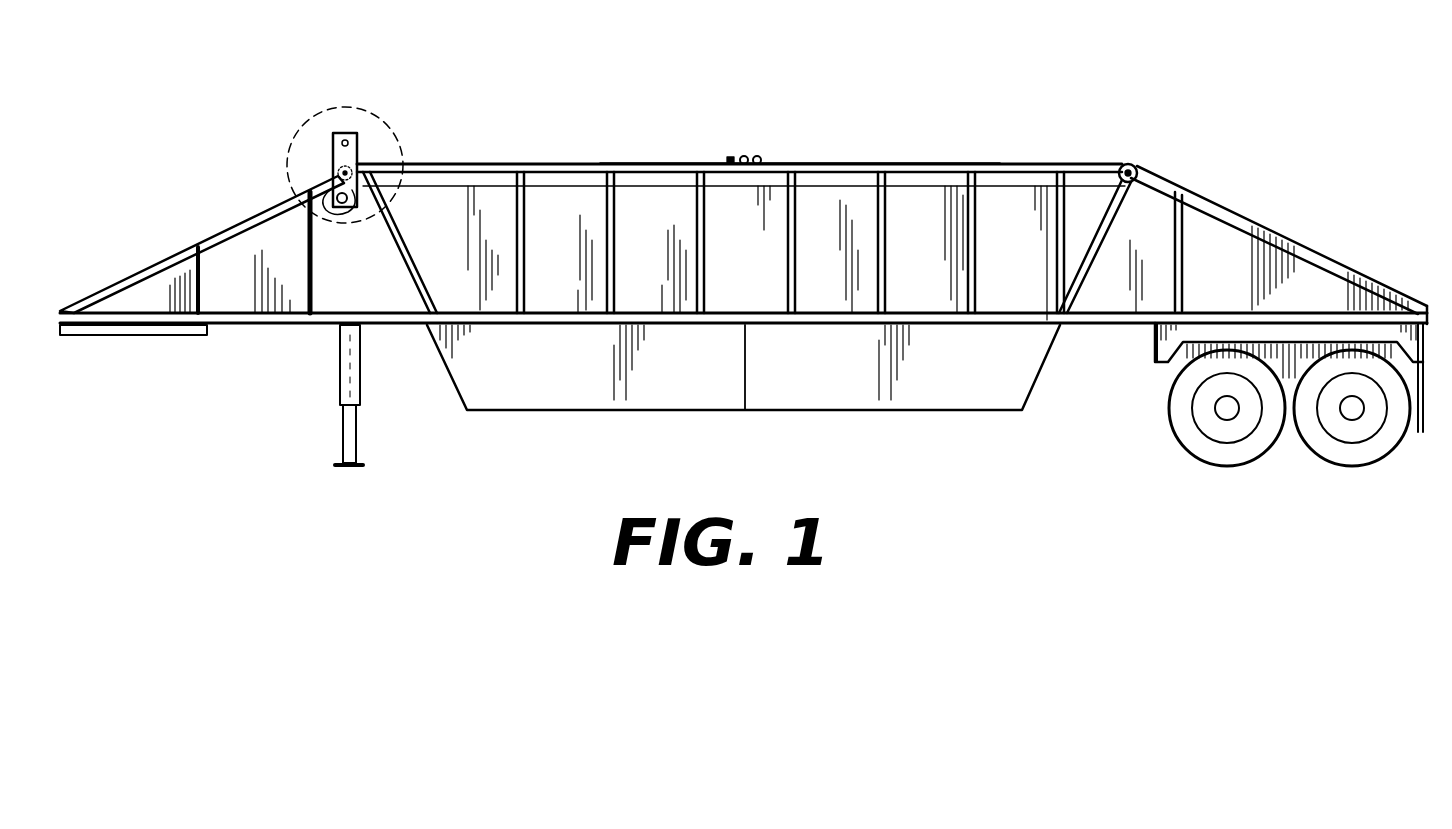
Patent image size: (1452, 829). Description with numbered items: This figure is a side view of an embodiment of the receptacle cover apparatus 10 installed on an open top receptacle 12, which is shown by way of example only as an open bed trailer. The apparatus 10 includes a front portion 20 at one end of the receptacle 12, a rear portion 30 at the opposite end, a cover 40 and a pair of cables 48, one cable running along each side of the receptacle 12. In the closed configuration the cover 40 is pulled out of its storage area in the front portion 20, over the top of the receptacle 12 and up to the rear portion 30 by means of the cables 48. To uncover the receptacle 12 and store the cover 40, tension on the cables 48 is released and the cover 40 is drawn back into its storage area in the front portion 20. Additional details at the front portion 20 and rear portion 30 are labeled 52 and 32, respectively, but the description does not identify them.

The receptacle cover apparatus 10 is at (674, 80).
The open top receptacle 12 is at (400, 338).
The front portion 20 is at (383, 102).
The rear portion 30 is at (1141, 130).
The pivot pin 32 is at (1150, 160).
The cover 40 is at (537, 163).
The cables 48 is at (871, 160).
The mounting bracket 52 is at (331, 148).